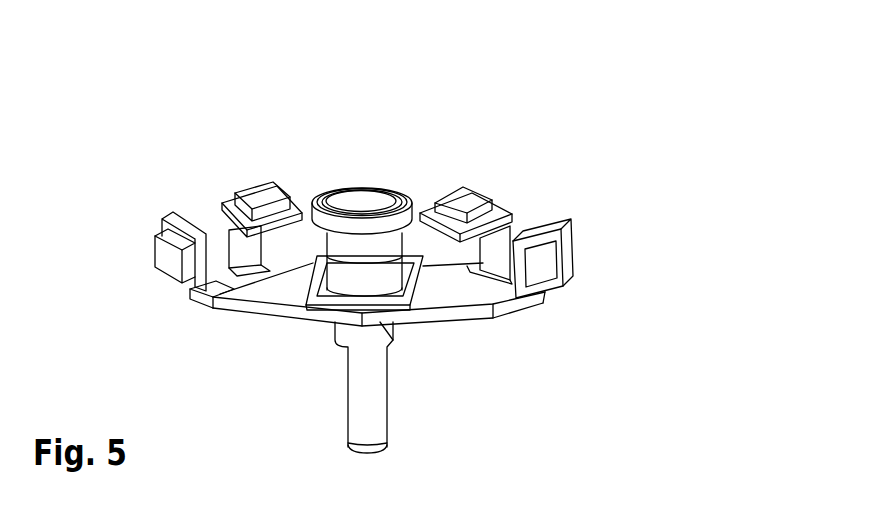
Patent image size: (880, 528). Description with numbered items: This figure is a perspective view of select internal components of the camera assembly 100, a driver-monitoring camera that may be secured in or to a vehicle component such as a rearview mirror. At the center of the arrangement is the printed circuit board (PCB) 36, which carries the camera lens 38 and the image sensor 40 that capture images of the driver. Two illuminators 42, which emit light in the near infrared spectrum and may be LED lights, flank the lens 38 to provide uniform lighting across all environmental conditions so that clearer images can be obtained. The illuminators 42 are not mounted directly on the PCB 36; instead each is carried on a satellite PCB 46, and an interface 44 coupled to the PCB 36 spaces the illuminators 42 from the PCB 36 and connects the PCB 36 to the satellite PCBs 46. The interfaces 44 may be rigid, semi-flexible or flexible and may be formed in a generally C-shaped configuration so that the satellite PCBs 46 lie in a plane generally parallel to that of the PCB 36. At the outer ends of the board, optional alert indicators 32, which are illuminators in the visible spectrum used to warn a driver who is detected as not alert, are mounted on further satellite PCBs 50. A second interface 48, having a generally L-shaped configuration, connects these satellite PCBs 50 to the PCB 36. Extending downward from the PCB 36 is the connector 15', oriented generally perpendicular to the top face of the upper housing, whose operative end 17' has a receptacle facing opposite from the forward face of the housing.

The camera assembly 100 is at (592, 214).
The connector 15' is at (416, 384).
The operative end 17' is at (422, 443).
The alert indicators 32 is at (173, 265).
The printed circuit board 36 is at (476, 310).
The camera lens 38 is at (355, 197).
The image sensor 40 is at (410, 254).
The illuminators 42 is at (259, 198).
The interface 44 is at (226, 232).
The satellite PCBs 46 is at (221, 205).
The second interface 48 is at (209, 308).
The satellite PCBs 50 is at (163, 218).